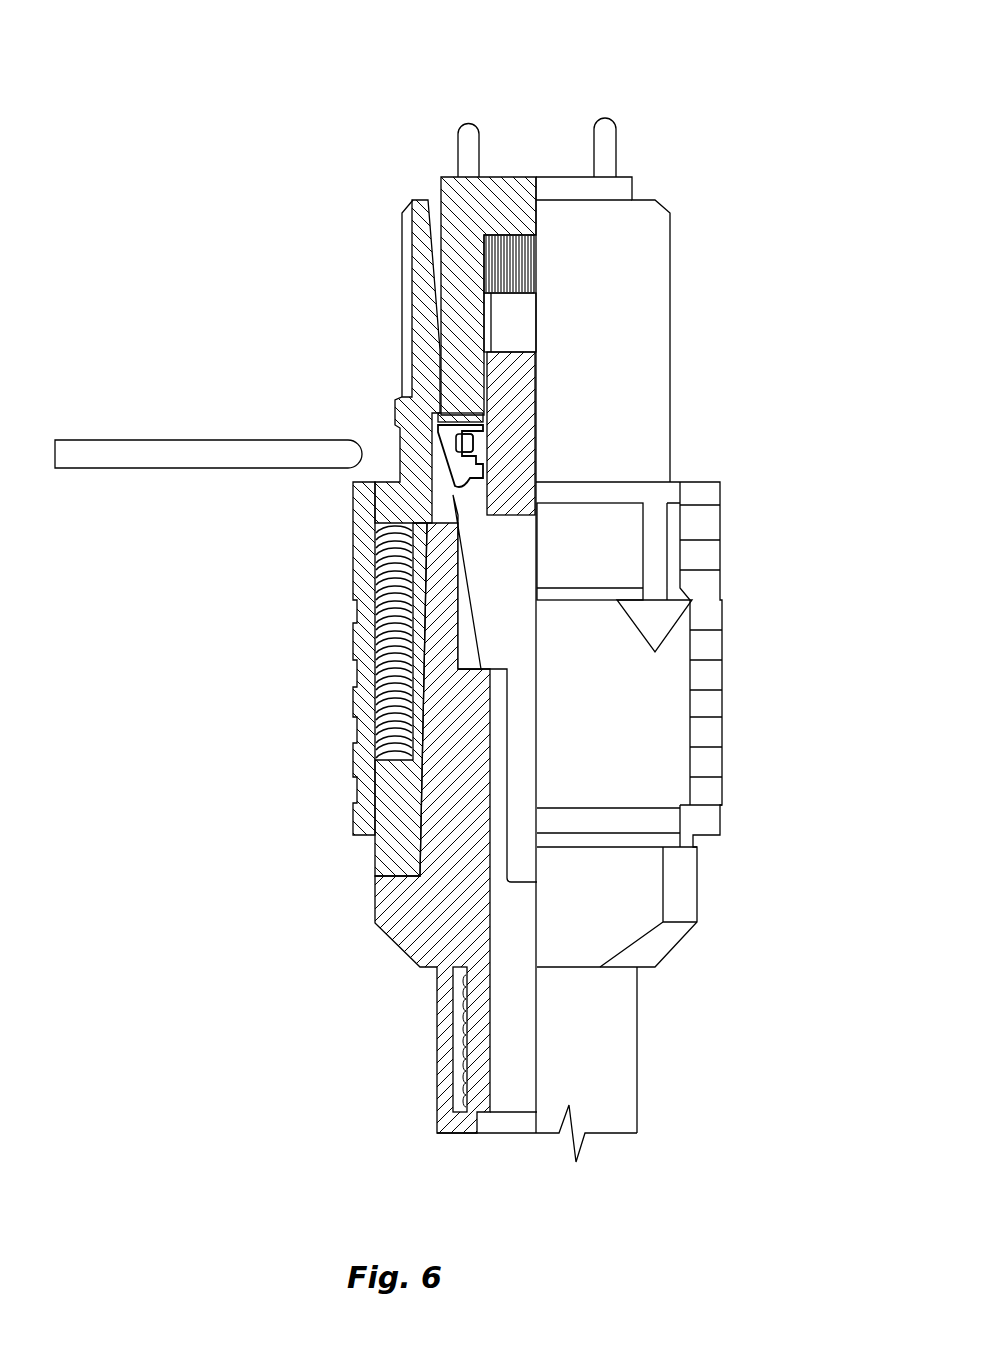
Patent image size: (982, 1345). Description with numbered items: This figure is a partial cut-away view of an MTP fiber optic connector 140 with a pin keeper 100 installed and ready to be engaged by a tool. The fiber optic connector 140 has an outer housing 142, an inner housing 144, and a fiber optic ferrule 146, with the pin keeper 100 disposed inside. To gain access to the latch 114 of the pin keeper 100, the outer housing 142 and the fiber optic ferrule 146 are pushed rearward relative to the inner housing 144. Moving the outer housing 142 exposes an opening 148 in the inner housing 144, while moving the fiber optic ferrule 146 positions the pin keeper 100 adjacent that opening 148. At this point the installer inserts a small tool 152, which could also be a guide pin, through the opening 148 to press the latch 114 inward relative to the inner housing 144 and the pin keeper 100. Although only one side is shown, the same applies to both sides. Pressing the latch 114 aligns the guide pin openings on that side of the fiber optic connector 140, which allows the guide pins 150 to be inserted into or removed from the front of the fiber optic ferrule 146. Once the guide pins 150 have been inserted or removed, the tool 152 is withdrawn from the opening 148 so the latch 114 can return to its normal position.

The pin keeper 100 is at (353, 533).
The latch 114 is at (440, 448).
The MTP fiber optic connector 140 is at (760, 123).
The outer housing 142 is at (724, 548).
The inner housing 144 is at (672, 294).
The fiber optic ferrule 146 is at (457, 183).
The opening 148 is at (398, 465).
The guide pin 150 is at (458, 150).
The tool 152 is at (106, 438).